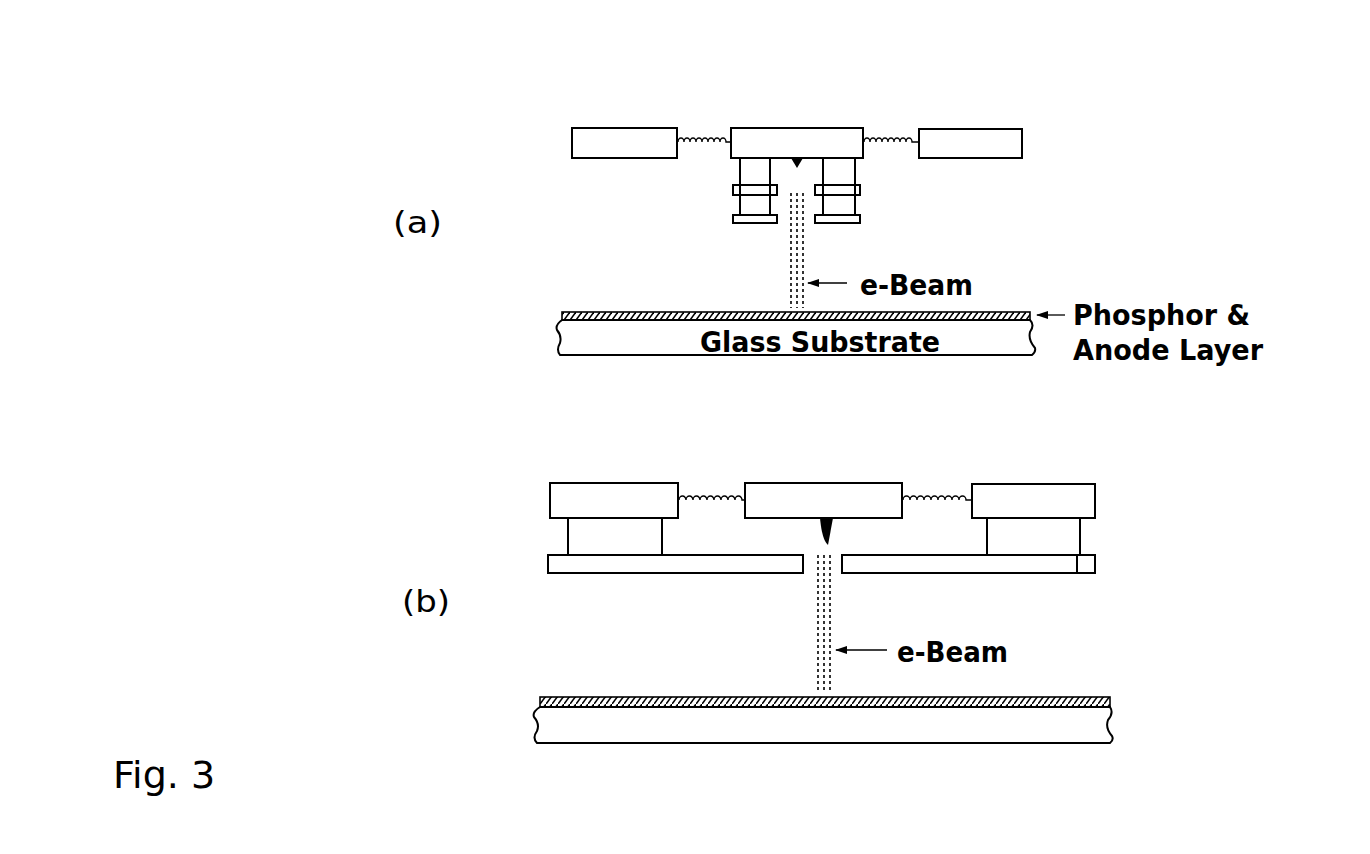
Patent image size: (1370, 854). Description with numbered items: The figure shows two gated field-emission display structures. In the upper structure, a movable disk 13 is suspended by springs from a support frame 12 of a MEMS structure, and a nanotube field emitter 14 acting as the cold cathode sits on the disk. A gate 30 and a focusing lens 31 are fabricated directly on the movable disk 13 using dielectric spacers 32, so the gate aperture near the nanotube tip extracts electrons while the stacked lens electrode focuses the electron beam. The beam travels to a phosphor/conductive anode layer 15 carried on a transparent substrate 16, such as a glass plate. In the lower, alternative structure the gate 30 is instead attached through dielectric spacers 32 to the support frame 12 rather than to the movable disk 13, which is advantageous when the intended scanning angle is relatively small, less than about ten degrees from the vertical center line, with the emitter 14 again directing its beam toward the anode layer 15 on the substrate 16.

The support frame 12 is at (894, 136).
The movable disk 13 is at (932, 476).
The nanotube field emitter 14 is at (830, 522).
The phosphor/conductive anode layer 15 is at (1047, 697).
The transparent substrate 16 is at (975, 746).
The gate 30 is at (1116, 563).
The focusing lens 31 is at (858, 220).
The dielectric spacers 32 is at (858, 175).